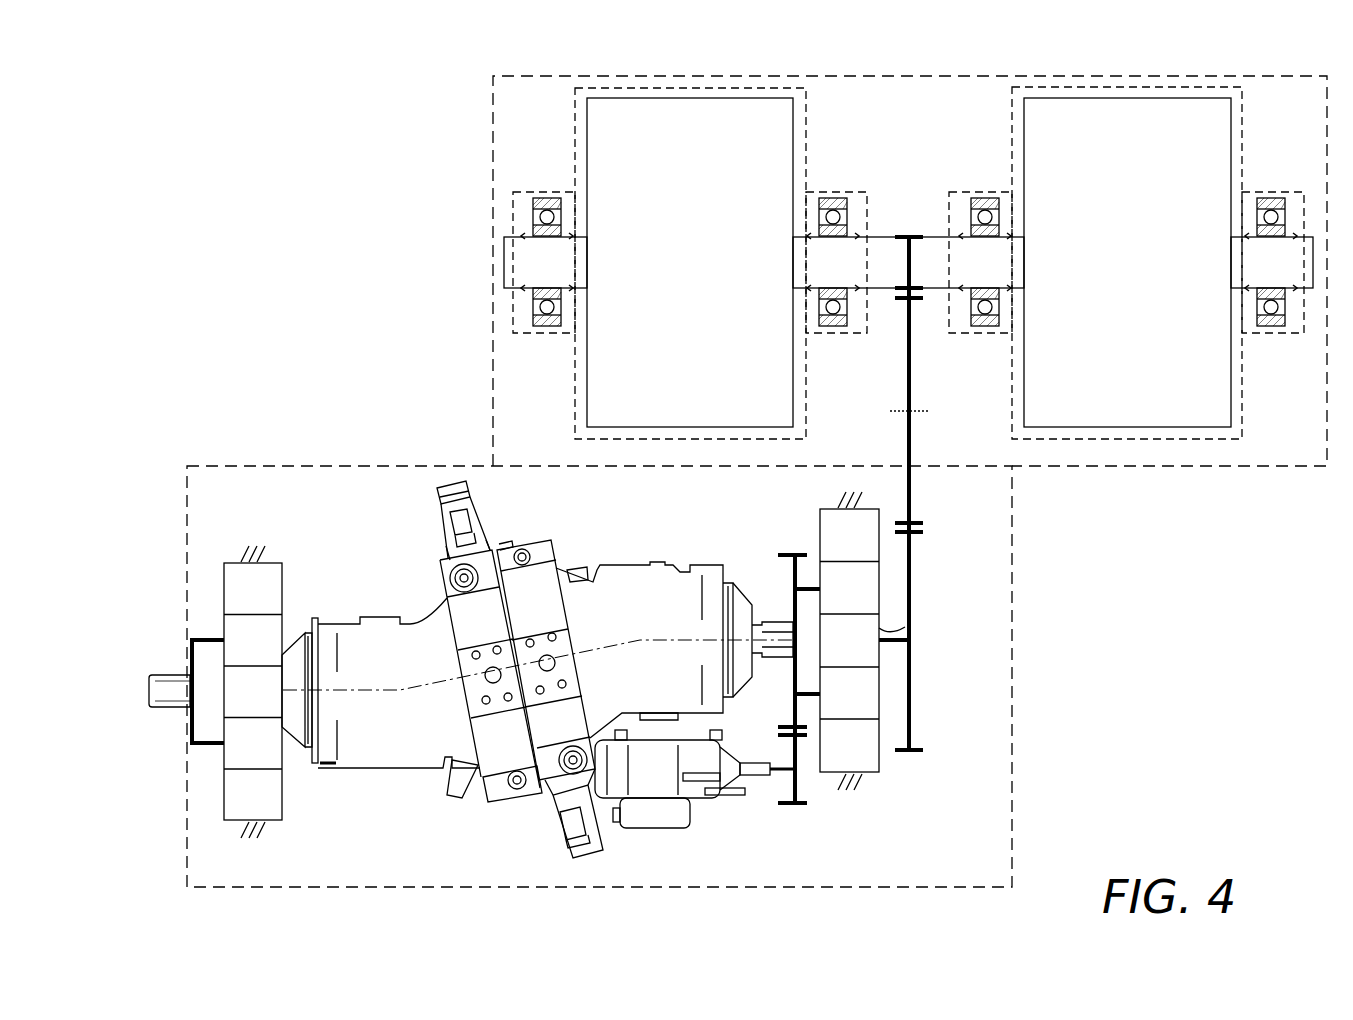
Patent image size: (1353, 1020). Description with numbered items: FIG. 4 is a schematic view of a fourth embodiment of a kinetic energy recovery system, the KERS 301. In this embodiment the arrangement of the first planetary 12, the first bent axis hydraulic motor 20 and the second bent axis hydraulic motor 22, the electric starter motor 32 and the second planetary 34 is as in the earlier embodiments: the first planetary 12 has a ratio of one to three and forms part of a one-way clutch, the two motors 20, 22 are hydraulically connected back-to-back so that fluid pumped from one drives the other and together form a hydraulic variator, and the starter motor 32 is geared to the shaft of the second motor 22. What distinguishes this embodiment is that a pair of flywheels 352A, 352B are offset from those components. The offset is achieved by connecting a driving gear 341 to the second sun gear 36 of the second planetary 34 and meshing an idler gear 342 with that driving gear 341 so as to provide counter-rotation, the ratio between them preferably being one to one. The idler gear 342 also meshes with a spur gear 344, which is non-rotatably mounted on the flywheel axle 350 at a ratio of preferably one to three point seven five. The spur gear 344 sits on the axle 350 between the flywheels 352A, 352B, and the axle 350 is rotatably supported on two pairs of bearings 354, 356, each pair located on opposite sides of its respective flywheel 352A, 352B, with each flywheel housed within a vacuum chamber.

The KERS 301 is at (910, 70).
The flywheel 352A is at (780, 124).
The flywheel 352B is at (1218, 130).
The bearings 354 is at (547, 310).
The bearings 356 is at (984, 213).
The spur gear 344 is at (910, 234).
The flywheel axle 350 is at (881, 280).
The idler gear 342 is at (912, 372).
The driving gear 341 is at (912, 684).
The second sun gear 36 is at (905, 627).
The second planetary gear 34 is at (850, 808).
The first planetary gear 12 is at (199, 580).
The first bent axis hydraulic motor 20 is at (404, 798).
The second bent axis hydraulic motor 22 is at (655, 553).
The electric starter motor 32 is at (655, 825).